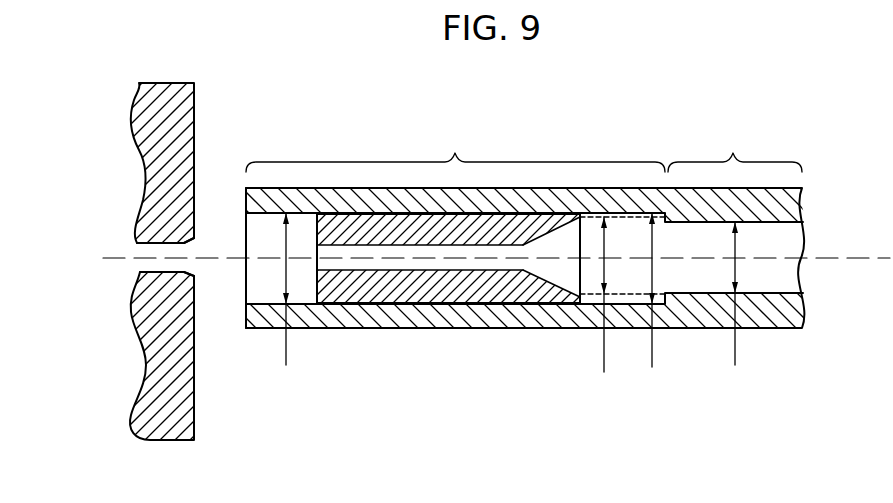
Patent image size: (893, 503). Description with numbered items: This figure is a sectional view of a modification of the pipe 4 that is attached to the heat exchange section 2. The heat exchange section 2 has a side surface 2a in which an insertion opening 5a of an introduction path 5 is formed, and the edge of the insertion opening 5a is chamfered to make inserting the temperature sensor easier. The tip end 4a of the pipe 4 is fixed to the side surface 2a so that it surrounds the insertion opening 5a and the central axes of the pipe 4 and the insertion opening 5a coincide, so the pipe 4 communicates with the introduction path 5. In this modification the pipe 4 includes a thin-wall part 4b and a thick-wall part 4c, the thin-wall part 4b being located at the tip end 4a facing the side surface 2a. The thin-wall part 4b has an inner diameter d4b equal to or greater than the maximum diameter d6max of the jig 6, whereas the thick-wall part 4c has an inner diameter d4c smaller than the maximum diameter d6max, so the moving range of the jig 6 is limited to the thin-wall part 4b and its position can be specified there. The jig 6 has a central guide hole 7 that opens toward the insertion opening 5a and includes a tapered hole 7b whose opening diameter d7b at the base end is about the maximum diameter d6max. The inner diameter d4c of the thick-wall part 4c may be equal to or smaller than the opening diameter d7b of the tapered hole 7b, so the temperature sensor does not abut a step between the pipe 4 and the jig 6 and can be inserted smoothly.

The heat exchange section 2 is at (131, 126).
The side surface 2a is at (194, 165).
The introduction path 5 is at (125, 256).
The insertion opening 5a is at (196, 258).
The pipe 4 is at (502, 188).
The tip end 4a is at (247, 214).
The thin-wall part 4b is at (455, 144).
The thick-wall part 4c is at (735, 145).
The guide hole 7 is at (357, 247).
The tapered hole 7b is at (547, 268).
The jig 6 is at (432, 305).
The inner diameter of the thin-wall part d4b is at (295, 308).
The opening diameter of the tapered hole d7b is at (622, 311).
The maximum diameter of the jig d6max is at (671, 307).
The inner diameter of the thick-wall part d4c is at (743, 310).